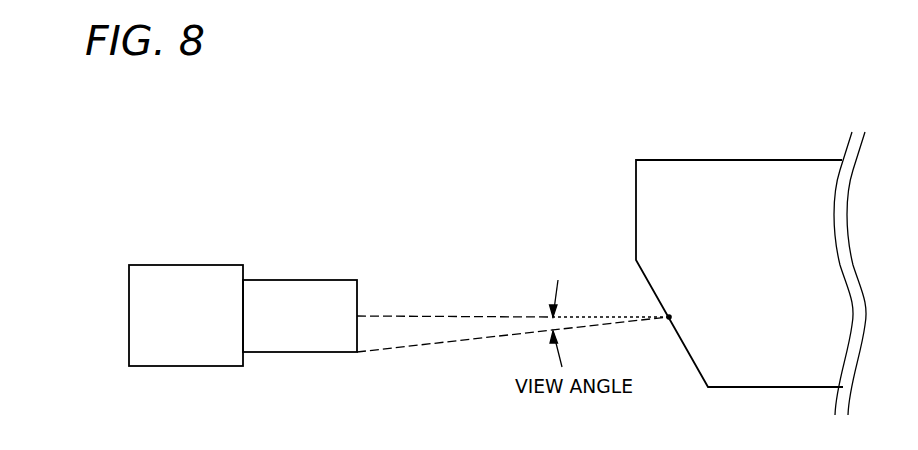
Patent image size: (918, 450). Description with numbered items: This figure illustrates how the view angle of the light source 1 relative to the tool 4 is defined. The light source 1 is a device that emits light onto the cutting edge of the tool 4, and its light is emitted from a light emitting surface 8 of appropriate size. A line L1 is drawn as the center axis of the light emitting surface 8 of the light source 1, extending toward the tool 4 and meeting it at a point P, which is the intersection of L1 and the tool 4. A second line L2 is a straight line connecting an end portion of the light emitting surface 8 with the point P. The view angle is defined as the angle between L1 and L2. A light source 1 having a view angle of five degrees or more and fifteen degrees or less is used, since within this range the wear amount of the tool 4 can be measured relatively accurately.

The light source 1 is at (137, 322).
The light emitting surface 8 is at (357, 298).
The tool 4 is at (690, 172).
The center axis of the light emitting surface L1 is at (445, 316).
The straight line connecting an end portion of the light emitting surface and the po L2 is at (460, 341).
The intersection of L1 and the tool P is at (681, 314).